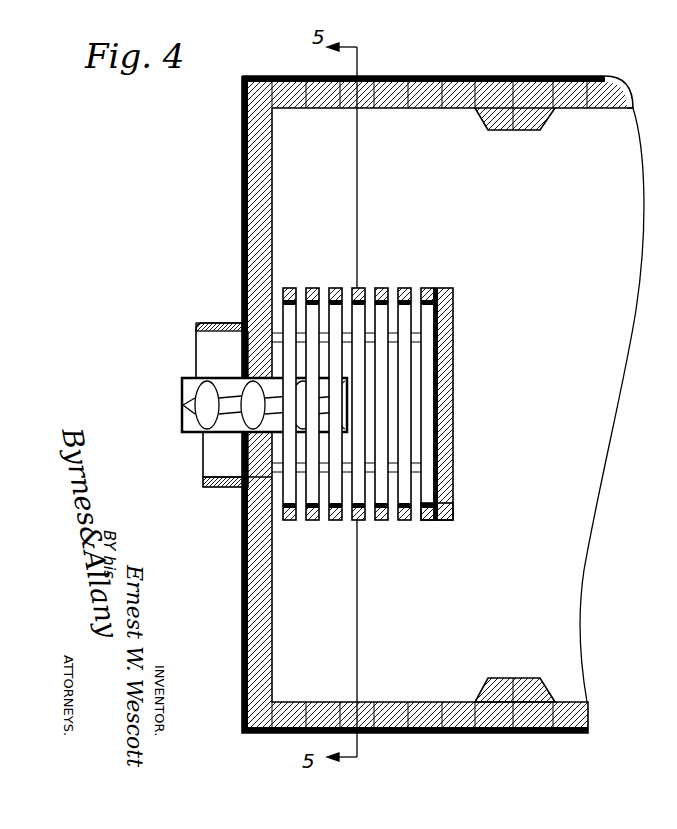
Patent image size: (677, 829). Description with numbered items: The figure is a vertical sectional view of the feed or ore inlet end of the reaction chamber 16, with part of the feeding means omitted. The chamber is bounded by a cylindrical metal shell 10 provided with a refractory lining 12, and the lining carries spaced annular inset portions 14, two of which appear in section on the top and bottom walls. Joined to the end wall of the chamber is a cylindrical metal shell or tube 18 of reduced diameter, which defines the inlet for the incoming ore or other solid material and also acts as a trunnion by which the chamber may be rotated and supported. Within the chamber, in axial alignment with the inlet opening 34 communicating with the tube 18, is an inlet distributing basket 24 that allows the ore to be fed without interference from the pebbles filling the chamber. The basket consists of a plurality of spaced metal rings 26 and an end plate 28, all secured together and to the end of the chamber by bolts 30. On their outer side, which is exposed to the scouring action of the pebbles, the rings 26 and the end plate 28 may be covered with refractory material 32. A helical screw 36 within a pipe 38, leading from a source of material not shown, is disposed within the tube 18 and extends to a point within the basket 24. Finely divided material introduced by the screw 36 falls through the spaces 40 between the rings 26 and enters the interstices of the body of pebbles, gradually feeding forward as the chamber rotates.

The cylindrical metal shell 10 is at (441, 77).
The refractory lining 12 is at (428, 110).
The annular inset portions 14 is at (540, 128).
The reaction chamber 16 is at (595, 405).
The cylindrical metal shell or tube 18 is at (218, 487).
The inlet distributing basket 24 is at (394, 409).
The spaced metal rings 26 is at (295, 302).
The end plate 28 is at (452, 356).
The bolts 30 is at (322, 338).
The refractory material 32 is at (452, 473).
The inlet opening 34 is at (257, 453).
The helical screw 36 is at (182, 427).
The pipe 38 is at (228, 378).
The spaces 40 is at (342, 522).